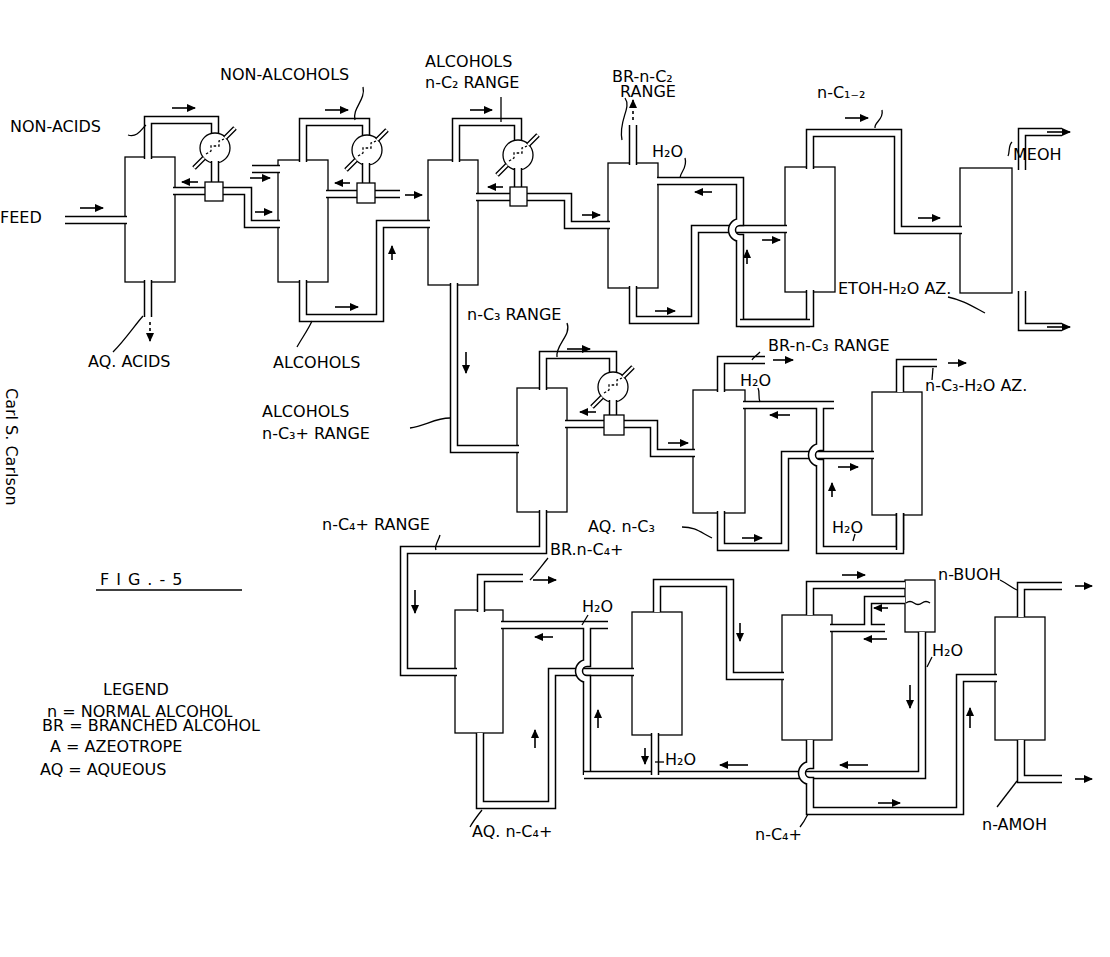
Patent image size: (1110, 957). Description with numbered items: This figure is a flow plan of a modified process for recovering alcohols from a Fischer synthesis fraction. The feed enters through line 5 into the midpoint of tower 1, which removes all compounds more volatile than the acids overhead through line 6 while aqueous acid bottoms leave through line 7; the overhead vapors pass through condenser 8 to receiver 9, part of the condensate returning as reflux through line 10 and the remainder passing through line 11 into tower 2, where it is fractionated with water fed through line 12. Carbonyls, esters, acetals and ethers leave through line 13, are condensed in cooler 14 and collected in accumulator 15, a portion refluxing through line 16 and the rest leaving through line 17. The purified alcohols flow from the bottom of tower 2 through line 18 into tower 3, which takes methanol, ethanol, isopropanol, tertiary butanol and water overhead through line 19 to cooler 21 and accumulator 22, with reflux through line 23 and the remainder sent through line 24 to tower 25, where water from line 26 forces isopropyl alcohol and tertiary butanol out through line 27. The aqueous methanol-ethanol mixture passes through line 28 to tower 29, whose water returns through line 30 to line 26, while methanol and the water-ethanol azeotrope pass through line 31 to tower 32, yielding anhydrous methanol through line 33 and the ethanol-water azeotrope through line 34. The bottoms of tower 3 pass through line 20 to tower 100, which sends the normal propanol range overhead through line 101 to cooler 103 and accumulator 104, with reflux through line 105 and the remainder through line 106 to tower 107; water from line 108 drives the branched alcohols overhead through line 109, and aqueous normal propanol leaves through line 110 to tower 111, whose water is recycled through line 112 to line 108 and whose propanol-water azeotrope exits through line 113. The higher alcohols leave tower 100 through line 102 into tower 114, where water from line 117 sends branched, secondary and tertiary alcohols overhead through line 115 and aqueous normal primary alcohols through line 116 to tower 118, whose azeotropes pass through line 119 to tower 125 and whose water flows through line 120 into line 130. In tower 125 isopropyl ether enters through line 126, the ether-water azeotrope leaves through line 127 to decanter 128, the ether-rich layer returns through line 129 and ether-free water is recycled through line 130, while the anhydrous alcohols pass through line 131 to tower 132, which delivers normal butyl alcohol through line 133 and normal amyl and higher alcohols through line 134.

The tower 1 is at (126, 181).
The tower 2 is at (318, 248).
The tower 3 is at (476, 263).
The line 5 is at (100, 224).
The line 6 is at (148, 116).
The line 7 is at (146, 316).
The condenser 8 is at (224, 134).
The receiver 9 is at (223, 186).
The line 10 is at (194, 195).
The line 11 is at (249, 227).
The line 12 is at (270, 168).
The line 13 is at (308, 121).
The cooler 14 is at (382, 150).
The accumulator 15 is at (376, 197).
The line 16 is at (348, 197).
The line 17 is at (378, 192).
The line 18 is at (364, 320).
The line 19 is at (456, 121).
The line 20 is at (452, 386).
The cooler 21 is at (526, 141).
The accumulator 22 is at (528, 195).
The line 23 is at (500, 200).
The line 24 is at (578, 227).
The tower 25 is at (654, 228).
The line 26 is at (712, 181).
The line 27 is at (637, 140).
The line 28 is at (630, 319).
The tower 29 is at (830, 250).
The line 30 is at (815, 322).
The line 31 is at (820, 115).
The tower 32 is at (1012, 240).
The line 33 is at (998, 134).
The line 34 is at (1036, 328).
The tower 100 is at (518, 490).
The line 101 is at (546, 354).
The line 102 is at (398, 552).
The cooler 103 is at (624, 374).
The accumulator 104 is at (628, 420).
The line 105 is at (588, 428).
The line 106 is at (655, 454).
The tower 107 is at (744, 430).
The line 108 is at (782, 402).
The line 109 is at (742, 359).
The line 110 is at (718, 546).
The tower 111 is at (924, 452).
The line 112 is at (904, 530).
The line 113 is at (906, 362).
The tower 114 is at (456, 708).
The line 115 is at (495, 578).
The line 116 is at (466, 800).
The line 117 is at (524, 624).
The tower 118 is at (682, 708).
The line 119 is at (652, 584).
The line 120 is at (648, 750).
The tower 125 is at (832, 698).
The line 126 is at (858, 634).
The line 127 is at (806, 590).
The decanter 128 is at (934, 603).
The line 129 is at (906, 598).
The line 130 is at (748, 780).
The line 131 is at (896, 816).
The tower 132 is at (1044, 672).
The line 133 is at (1020, 584).
The line 134 is at (1032, 782).